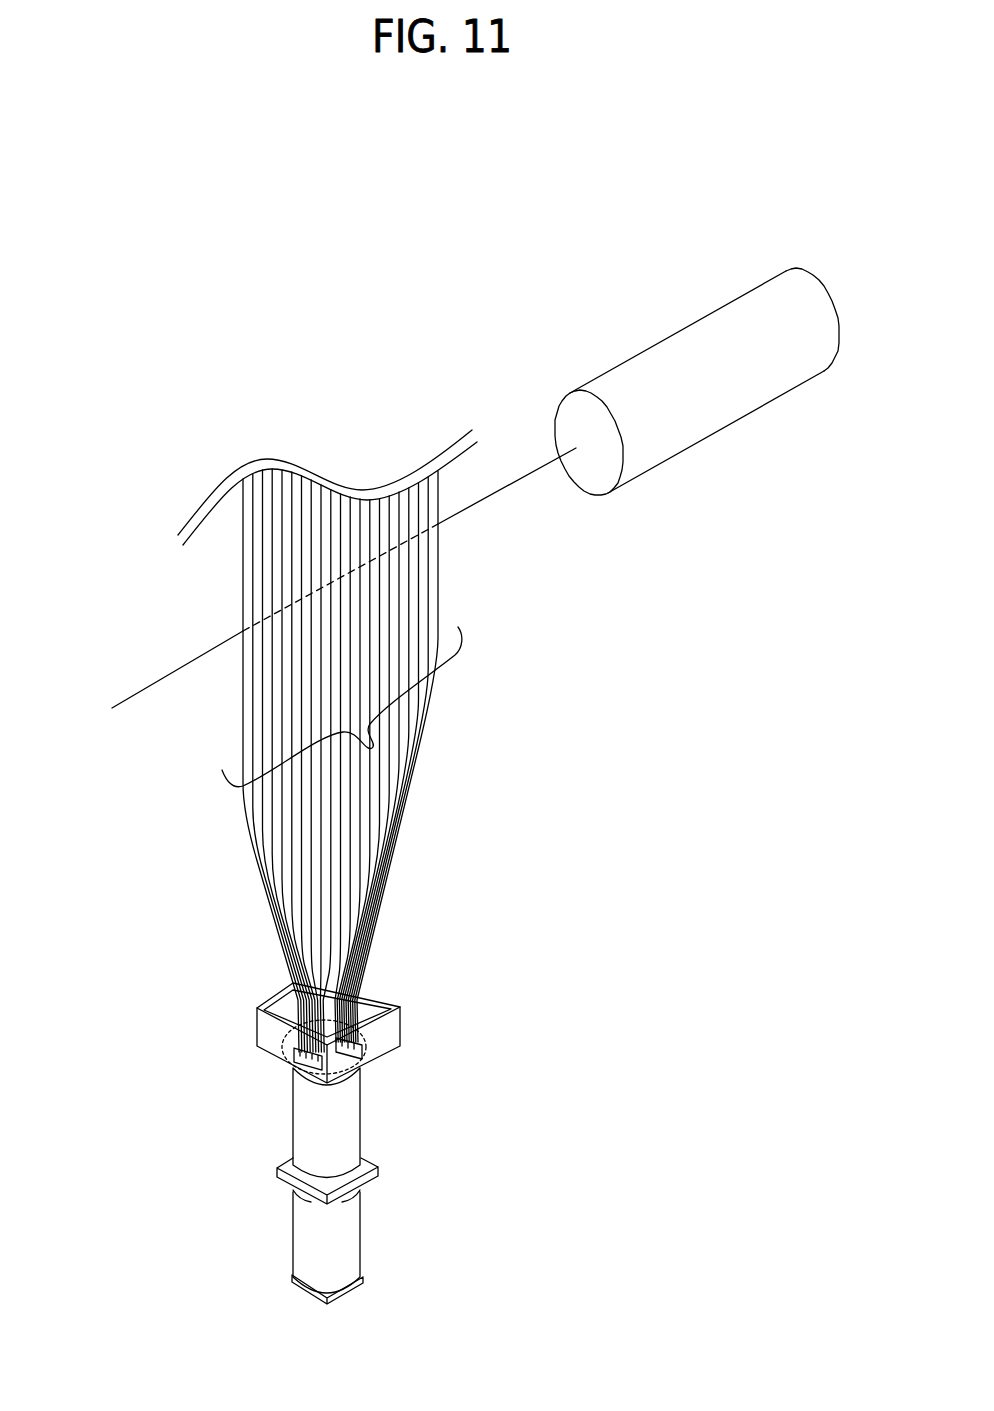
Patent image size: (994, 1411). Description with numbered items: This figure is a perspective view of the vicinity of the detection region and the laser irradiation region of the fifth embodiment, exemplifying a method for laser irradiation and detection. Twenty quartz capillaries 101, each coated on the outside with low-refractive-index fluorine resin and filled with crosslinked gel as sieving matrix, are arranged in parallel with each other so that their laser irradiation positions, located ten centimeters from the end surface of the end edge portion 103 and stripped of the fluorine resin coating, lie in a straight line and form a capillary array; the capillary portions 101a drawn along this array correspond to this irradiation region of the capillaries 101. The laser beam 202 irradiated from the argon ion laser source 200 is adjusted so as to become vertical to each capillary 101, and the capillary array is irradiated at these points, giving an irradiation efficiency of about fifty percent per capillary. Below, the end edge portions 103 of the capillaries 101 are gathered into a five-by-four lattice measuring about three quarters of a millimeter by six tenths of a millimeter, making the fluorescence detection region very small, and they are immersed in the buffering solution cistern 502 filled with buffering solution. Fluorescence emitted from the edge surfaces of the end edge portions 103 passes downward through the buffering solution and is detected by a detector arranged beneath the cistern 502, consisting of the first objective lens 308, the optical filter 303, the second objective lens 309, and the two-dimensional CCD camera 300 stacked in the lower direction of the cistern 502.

The argon ion laser source 200 is at (675, 333).
The laser beam 202 is at (470, 511).
The capillary 101 is at (392, 847).
The fiber end portions 101a is at (375, 747).
The end edge portion 103 is at (365, 1032).
The buffering solution cistern 502 is at (271, 997).
The first objective lens 308 is at (290, 1095).
The optical filter 303 is at (279, 1169).
The second objective lens 309 is at (294, 1237).
The two-dimensional CCD camera 300 is at (294, 1288).